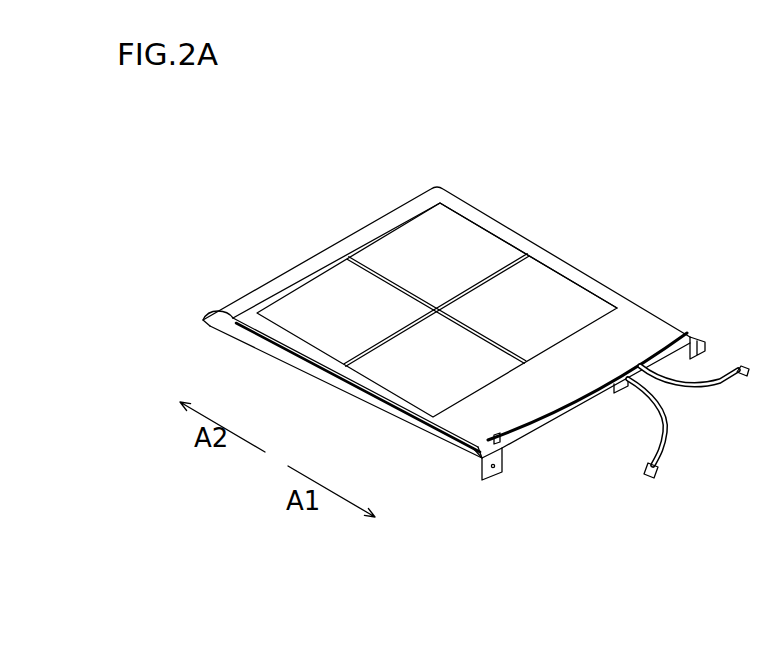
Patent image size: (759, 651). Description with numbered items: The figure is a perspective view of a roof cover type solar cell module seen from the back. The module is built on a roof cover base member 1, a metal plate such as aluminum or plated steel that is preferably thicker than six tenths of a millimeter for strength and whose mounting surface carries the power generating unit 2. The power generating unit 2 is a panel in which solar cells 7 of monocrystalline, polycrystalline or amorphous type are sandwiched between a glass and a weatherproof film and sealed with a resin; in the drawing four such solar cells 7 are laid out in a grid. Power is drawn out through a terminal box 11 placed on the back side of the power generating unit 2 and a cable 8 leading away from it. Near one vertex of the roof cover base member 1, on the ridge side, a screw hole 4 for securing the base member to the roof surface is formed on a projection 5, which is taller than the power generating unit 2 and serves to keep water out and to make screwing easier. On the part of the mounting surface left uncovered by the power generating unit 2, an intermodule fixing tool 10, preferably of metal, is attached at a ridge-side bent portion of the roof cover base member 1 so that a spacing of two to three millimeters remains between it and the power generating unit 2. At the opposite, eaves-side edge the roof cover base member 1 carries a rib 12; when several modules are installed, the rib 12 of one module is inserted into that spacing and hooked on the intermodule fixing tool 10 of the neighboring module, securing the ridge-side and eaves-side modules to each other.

The roof cover base member 1 is at (560, 416).
The power generating unit 2 is at (483, 221).
The screw hole 4 is at (503, 433).
The projection 5 is at (501, 442).
The solar cells 7 is at (548, 290).
The cable 8 is at (690, 392).
The intermodule fixing tool 10 is at (452, 432).
The terminal box 11 is at (615, 391).
The rib 12 is at (215, 326).